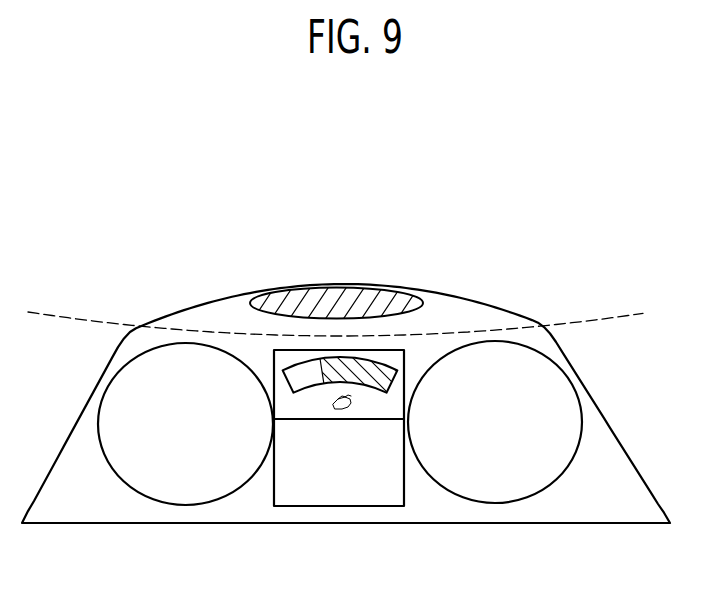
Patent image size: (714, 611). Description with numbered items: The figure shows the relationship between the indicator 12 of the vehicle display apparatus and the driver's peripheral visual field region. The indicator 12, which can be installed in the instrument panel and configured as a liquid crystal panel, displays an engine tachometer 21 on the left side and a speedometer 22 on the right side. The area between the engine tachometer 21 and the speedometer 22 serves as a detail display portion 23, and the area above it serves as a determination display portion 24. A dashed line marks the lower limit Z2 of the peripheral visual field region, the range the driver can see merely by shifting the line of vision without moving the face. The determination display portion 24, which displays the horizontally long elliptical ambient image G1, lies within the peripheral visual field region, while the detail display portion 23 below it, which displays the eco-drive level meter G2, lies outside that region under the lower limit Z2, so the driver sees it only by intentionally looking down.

The indicator 12 is at (505, 305).
The lower limit of the peripheral visual field region Z2 is at (613, 318).
The determination display portion 24 is at (240, 307).
The ambient image G1 is at (340, 298).
The eco-drive level meter G2 is at (378, 368).
The engine tachometer 21 is at (187, 490).
The speedometer 22 is at (500, 490).
The detail display portion 23 is at (337, 490).